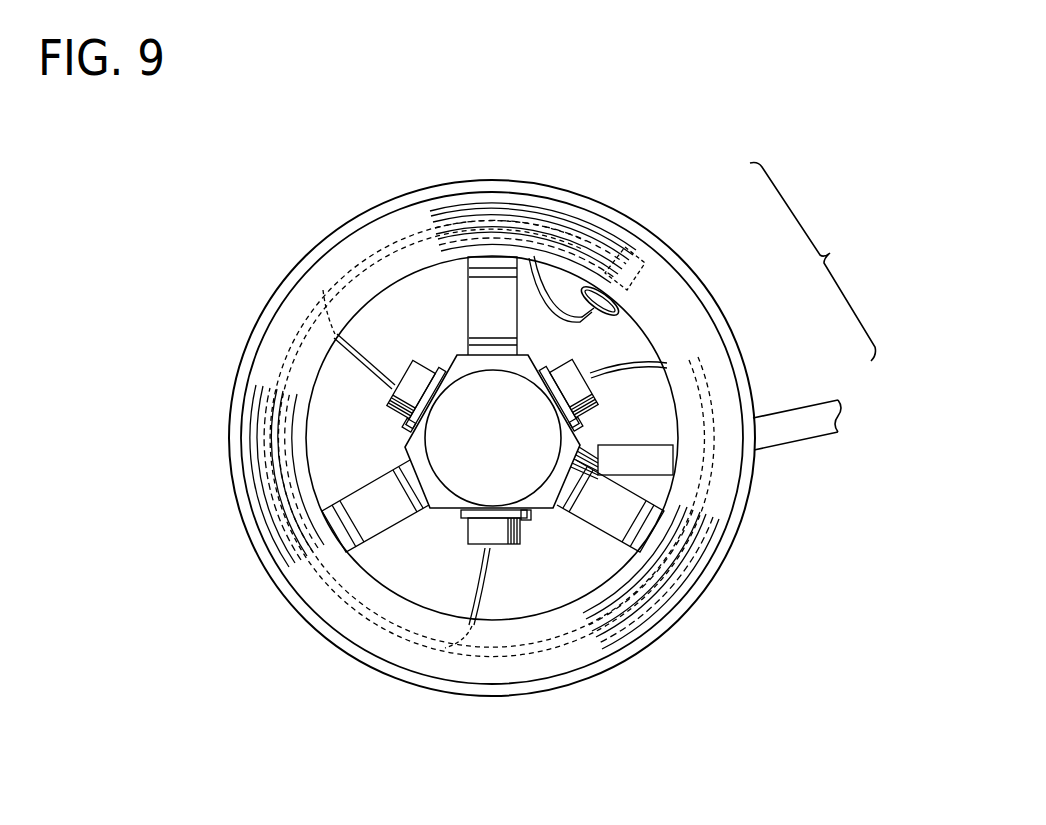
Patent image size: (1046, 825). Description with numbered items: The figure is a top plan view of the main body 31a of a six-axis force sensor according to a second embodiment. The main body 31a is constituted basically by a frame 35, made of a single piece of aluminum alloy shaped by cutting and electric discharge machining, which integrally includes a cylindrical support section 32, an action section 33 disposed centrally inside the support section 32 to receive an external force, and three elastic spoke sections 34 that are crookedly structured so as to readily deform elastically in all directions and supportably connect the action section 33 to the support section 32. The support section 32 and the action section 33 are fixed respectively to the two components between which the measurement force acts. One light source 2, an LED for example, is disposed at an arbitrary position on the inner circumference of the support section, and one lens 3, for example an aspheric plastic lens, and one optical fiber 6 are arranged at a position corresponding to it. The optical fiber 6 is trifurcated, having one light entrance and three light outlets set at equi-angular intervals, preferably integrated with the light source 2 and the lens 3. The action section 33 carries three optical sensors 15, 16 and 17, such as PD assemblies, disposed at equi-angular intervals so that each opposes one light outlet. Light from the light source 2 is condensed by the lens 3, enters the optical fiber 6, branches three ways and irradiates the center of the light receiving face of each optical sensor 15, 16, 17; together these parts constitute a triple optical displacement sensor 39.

The main body 31a is at (252, 283).
The support section 32 is at (330, 603).
The optical fiber 6 is at (363, 257).
The elastic spoke sections 34 is at (477, 297).
The action section 33 is at (502, 387).
The optical sensor 15 is at (390, 402).
The optical sensor 16 is at (518, 537).
The optical sensor 17 is at (667, 367).
The light source 2 is at (636, 252).
The lens 3 is at (623, 308).
The triple optical displacement sensor 39 is at (813, 262).
The frame 35 is at (752, 487).